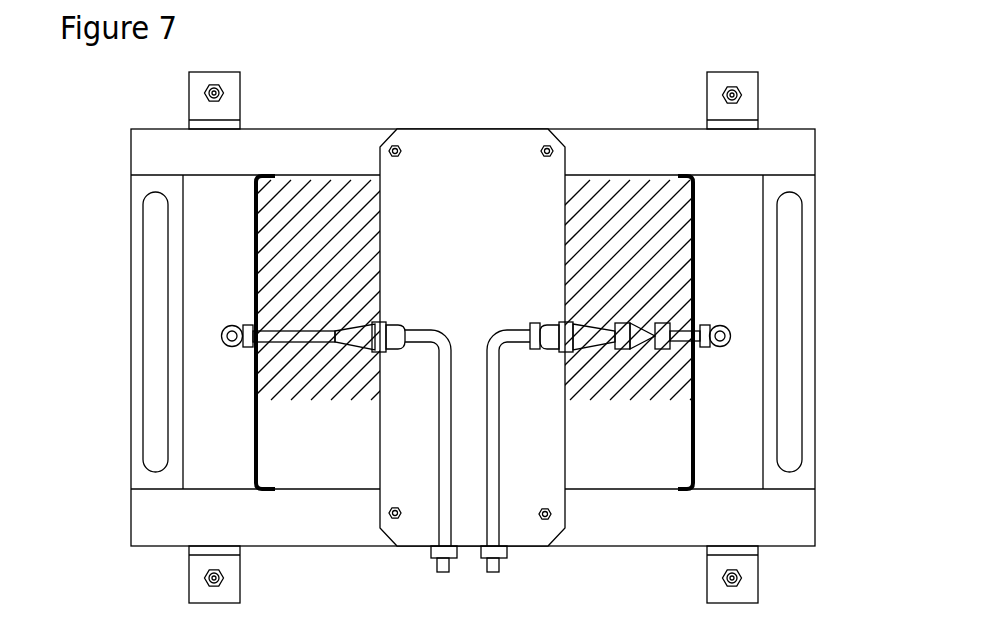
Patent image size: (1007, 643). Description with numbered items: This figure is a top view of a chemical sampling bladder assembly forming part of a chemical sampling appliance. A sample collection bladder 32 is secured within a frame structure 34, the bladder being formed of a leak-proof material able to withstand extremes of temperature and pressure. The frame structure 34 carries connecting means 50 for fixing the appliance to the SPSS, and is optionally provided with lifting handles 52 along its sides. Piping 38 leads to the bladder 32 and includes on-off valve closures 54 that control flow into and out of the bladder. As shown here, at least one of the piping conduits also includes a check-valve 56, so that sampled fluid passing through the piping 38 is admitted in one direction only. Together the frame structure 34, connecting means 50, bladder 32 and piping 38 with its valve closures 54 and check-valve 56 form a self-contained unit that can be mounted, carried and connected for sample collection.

The sample collection bladder 32 is at (598, 400).
The frame structure 34 is at (793, 145).
The piping 38 is at (439, 478).
The connecting means 50 is at (738, 583).
The lifting handles 52 is at (155, 268).
The on-off valve closures 54 is at (561, 322).
The check-valve 56 is at (648, 340).